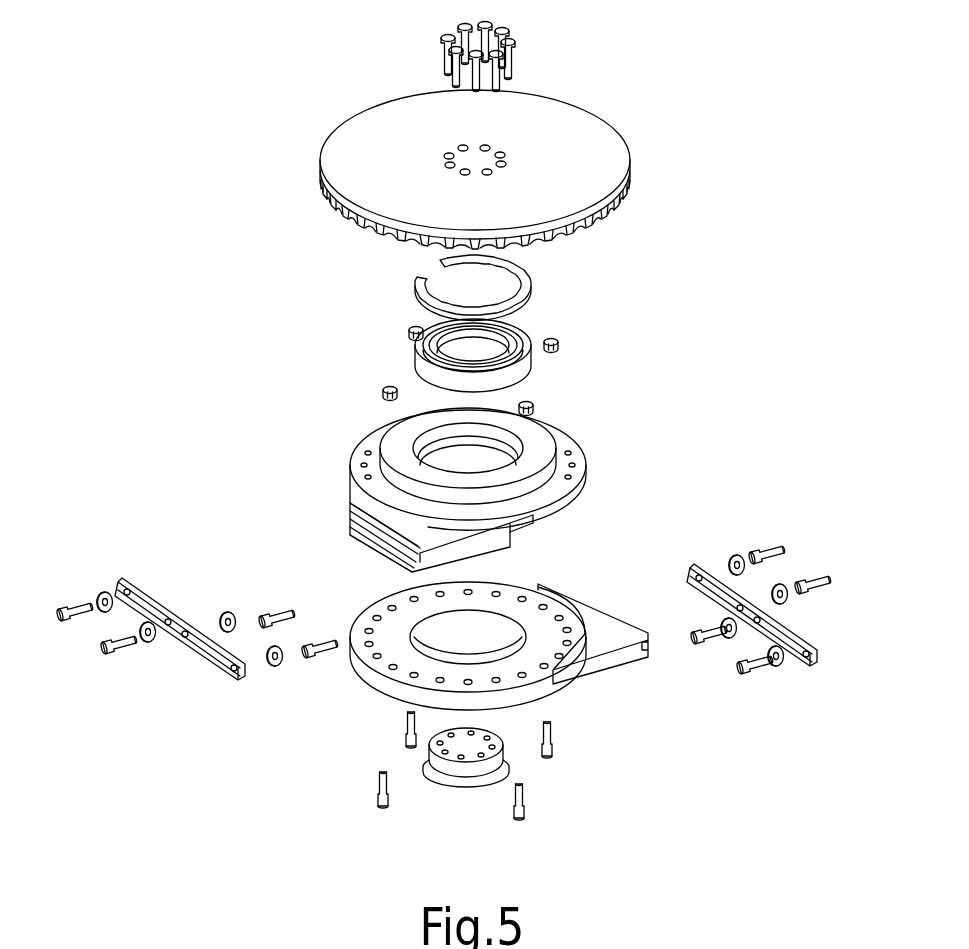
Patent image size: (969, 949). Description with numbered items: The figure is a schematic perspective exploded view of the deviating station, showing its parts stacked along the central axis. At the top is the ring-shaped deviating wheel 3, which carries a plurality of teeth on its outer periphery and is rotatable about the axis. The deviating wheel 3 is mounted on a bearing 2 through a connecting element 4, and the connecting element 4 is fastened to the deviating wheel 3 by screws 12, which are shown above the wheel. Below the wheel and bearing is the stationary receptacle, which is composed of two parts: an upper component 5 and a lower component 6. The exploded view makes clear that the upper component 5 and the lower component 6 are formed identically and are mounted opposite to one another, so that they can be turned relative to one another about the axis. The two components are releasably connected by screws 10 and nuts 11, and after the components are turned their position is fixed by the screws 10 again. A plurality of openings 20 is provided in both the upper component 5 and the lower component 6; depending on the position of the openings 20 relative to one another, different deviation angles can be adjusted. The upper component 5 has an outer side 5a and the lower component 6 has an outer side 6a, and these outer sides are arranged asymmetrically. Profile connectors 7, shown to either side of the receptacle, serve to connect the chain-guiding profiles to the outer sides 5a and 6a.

The bearing 2 is at (536, 370).
The deviating wheel 3 is at (548, 108).
The connecting element 4 is at (458, 777).
The upper component 5 is at (479, 489).
The outer side 5a is at (383, 538).
The lower component 6 is at (506, 629).
The outer side 6a is at (650, 657).
The profile connector 7 is at (220, 666).
The screws 10 is at (378, 790).
The nuts 11 is at (383, 393).
The screws 12 is at (512, 54).
The openings 20 is at (575, 463).